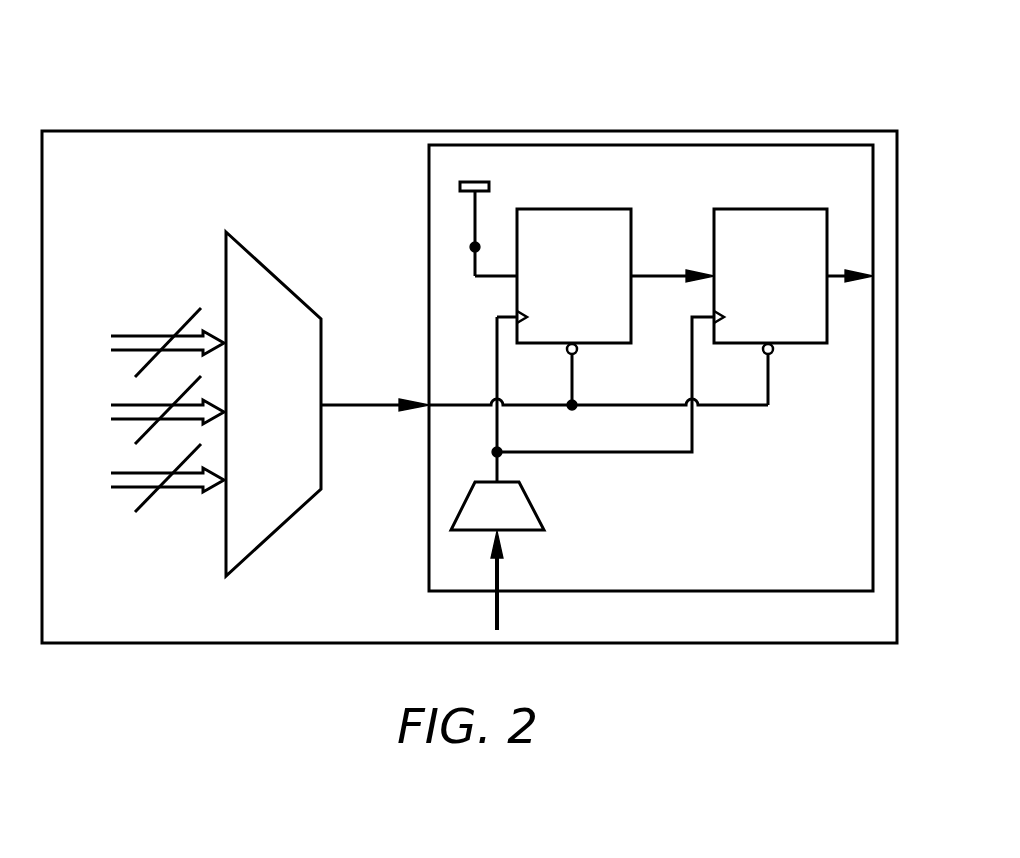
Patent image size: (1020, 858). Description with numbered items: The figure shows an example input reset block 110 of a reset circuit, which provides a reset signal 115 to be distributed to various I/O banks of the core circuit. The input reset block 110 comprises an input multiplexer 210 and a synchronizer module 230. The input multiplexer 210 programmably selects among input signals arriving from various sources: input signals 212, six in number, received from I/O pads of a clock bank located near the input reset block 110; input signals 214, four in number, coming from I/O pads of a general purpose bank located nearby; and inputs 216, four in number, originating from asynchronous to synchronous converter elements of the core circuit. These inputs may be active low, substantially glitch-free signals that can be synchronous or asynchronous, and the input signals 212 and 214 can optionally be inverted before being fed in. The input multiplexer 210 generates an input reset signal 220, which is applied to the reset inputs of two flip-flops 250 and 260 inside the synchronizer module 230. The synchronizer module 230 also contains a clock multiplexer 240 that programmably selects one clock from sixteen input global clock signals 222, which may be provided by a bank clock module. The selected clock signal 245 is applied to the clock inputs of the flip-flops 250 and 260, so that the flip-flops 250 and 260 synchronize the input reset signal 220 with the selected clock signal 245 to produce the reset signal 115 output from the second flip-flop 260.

The input reset block 110 is at (819, 74).
The synchronizer module 230 is at (790, 592).
The input multiplexer 210 is at (274, 272).
The input signals 212 is at (133, 336).
The input signals 214 is at (133, 405).
The inputs 216 is at (133, 473).
The input reset signal 220 is at (364, 403).
The flip-flop 250 is at (609, 209).
The flip-flop 260 is at (793, 209).
The reset signal 115 is at (838, 280).
The selected clock signal 245 is at (497, 458).
The clock multiplexer 240 is at (533, 500).
The input global clock signals 222 is at (500, 616).